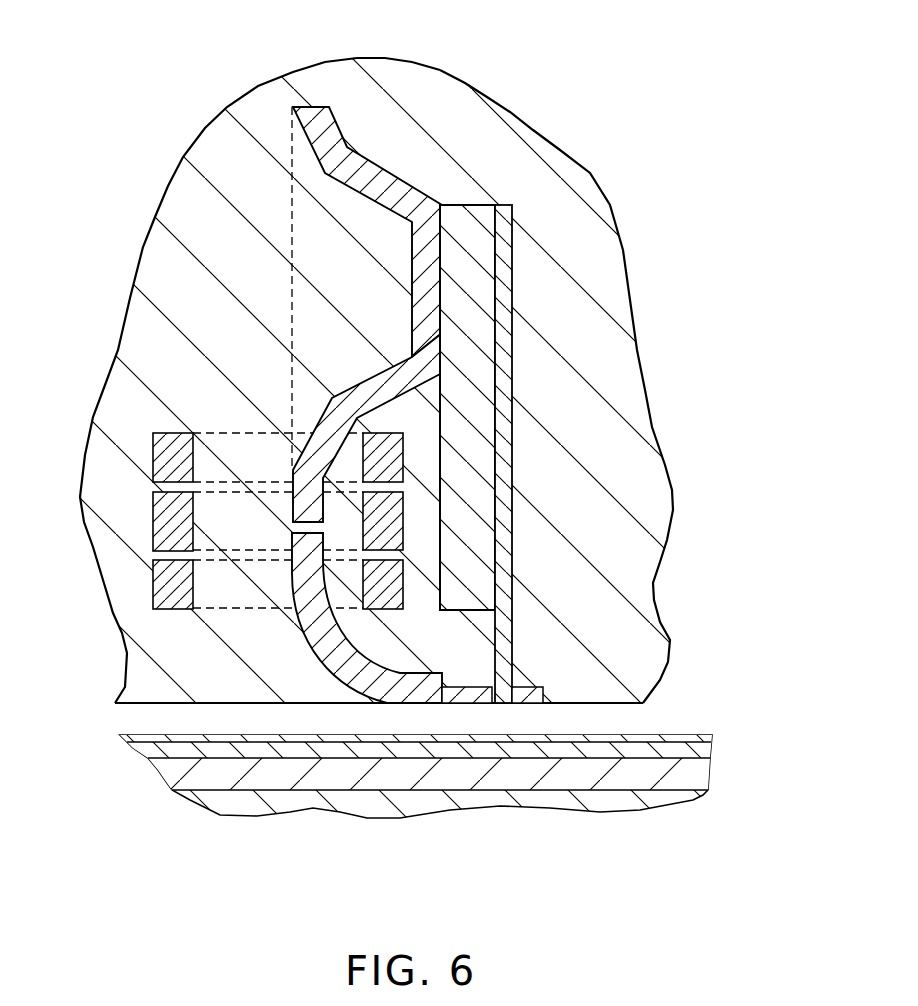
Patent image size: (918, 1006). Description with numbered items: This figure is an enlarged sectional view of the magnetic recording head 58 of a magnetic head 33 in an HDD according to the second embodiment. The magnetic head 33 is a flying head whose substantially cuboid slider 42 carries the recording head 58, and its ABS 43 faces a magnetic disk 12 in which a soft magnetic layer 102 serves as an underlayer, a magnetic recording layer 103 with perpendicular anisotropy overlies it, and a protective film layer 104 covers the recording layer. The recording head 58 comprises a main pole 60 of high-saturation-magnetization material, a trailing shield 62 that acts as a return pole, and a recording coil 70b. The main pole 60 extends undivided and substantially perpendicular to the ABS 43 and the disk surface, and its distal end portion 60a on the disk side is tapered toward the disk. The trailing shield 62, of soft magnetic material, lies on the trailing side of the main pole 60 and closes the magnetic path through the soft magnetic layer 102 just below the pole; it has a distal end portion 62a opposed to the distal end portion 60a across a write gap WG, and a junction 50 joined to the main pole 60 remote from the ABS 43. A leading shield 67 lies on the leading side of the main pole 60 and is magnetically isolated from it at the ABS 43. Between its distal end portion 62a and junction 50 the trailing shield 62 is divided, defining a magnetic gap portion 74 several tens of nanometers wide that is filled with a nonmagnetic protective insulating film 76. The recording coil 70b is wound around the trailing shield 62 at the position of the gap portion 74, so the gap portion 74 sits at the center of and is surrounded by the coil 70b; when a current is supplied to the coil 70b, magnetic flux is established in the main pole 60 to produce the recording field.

The magnetic disk 12 is at (673, 783).
The magnetic head 33 is at (366, 450).
The slider 42 is at (595, 195).
The ABS 43 is at (170, 703).
The junction 50 is at (420, 277).
The magnetic recording head 58 is at (418, 97).
The main pole 60 is at (507, 432).
The distal end portion of the main pole 60a is at (500, 697).
The trailing shield 62 is at (317, 633).
The distal end portion of the trailing shield 62a is at (463, 697).
The leading shield 67 is at (527, 697).
The recording coil 70b is at (156, 512).
The magnetic gap portion 74 is at (298, 528).
The protective insulating film 76 is at (632, 360).
The soft magnetic layer 102 is at (703, 773).
The magnetic recording layer 103 is at (707, 748).
The protective film layer 104 is at (712, 737).
The write gap WG is at (492, 697).